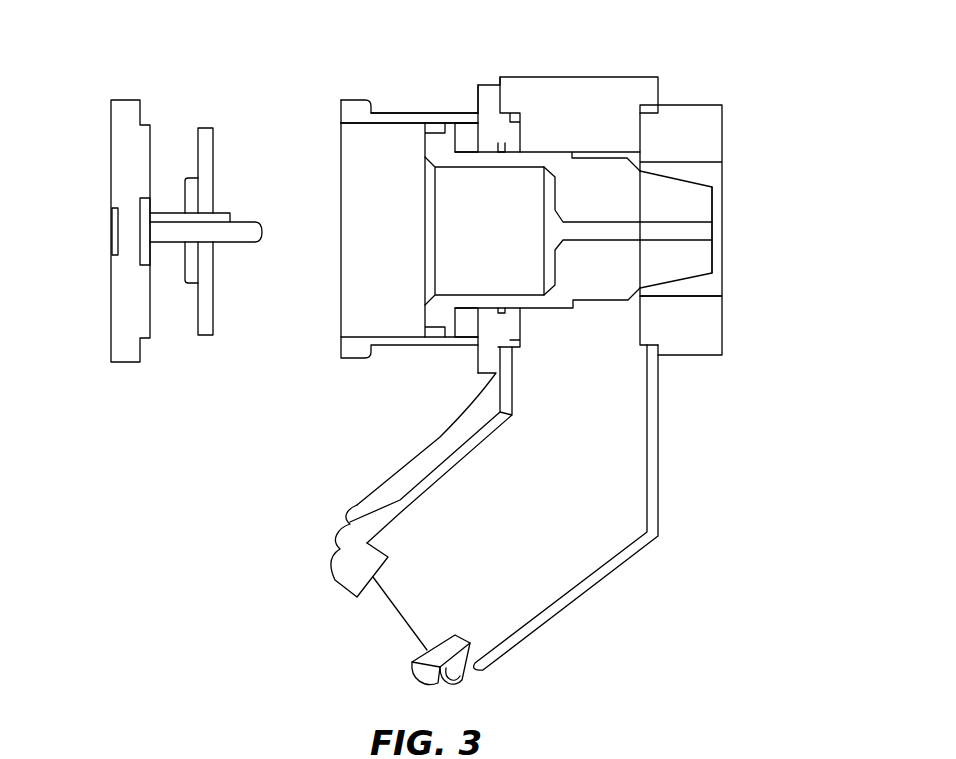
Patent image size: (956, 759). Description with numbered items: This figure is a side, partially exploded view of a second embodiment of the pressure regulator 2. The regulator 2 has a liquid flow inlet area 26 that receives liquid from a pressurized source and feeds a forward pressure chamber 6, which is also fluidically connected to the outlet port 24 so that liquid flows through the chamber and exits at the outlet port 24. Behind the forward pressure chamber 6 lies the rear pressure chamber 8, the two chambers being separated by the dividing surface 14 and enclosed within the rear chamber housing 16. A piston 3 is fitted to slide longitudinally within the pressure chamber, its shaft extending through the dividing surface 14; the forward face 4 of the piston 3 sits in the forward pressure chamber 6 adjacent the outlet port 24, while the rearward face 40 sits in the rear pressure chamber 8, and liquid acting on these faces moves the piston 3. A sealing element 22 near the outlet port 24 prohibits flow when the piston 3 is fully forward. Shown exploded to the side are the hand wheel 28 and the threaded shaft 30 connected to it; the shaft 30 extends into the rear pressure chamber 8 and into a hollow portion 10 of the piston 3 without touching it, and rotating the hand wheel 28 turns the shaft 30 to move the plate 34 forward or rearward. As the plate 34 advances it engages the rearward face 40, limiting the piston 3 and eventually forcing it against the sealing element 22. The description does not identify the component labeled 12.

The pressure regulator 2 is at (559, 347).
The piston 3 is at (612, 268).
The forward face of the piston 4 is at (690, 172).
The forward pressure chamber 6 is at (622, 115).
The rear pressure chamber 8 is at (372, 290).
The hollow portion of the piston 10 is at (668, 461).
The cap 12 is at (582, 77).
The dividing surface 14 is at (508, 308).
The rear chamber housing 16 is at (417, 112).
The sealing element 22 is at (642, 328).
The outlet port 24 is at (718, 286).
The liquid flow inlet area 26 is at (532, 633).
The hand wheel 28 is at (120, 235).
The threaded shaft 30 is at (212, 231).
The movable plate 34 is at (174, 208).
The rearward face of the piston 40 is at (458, 270).